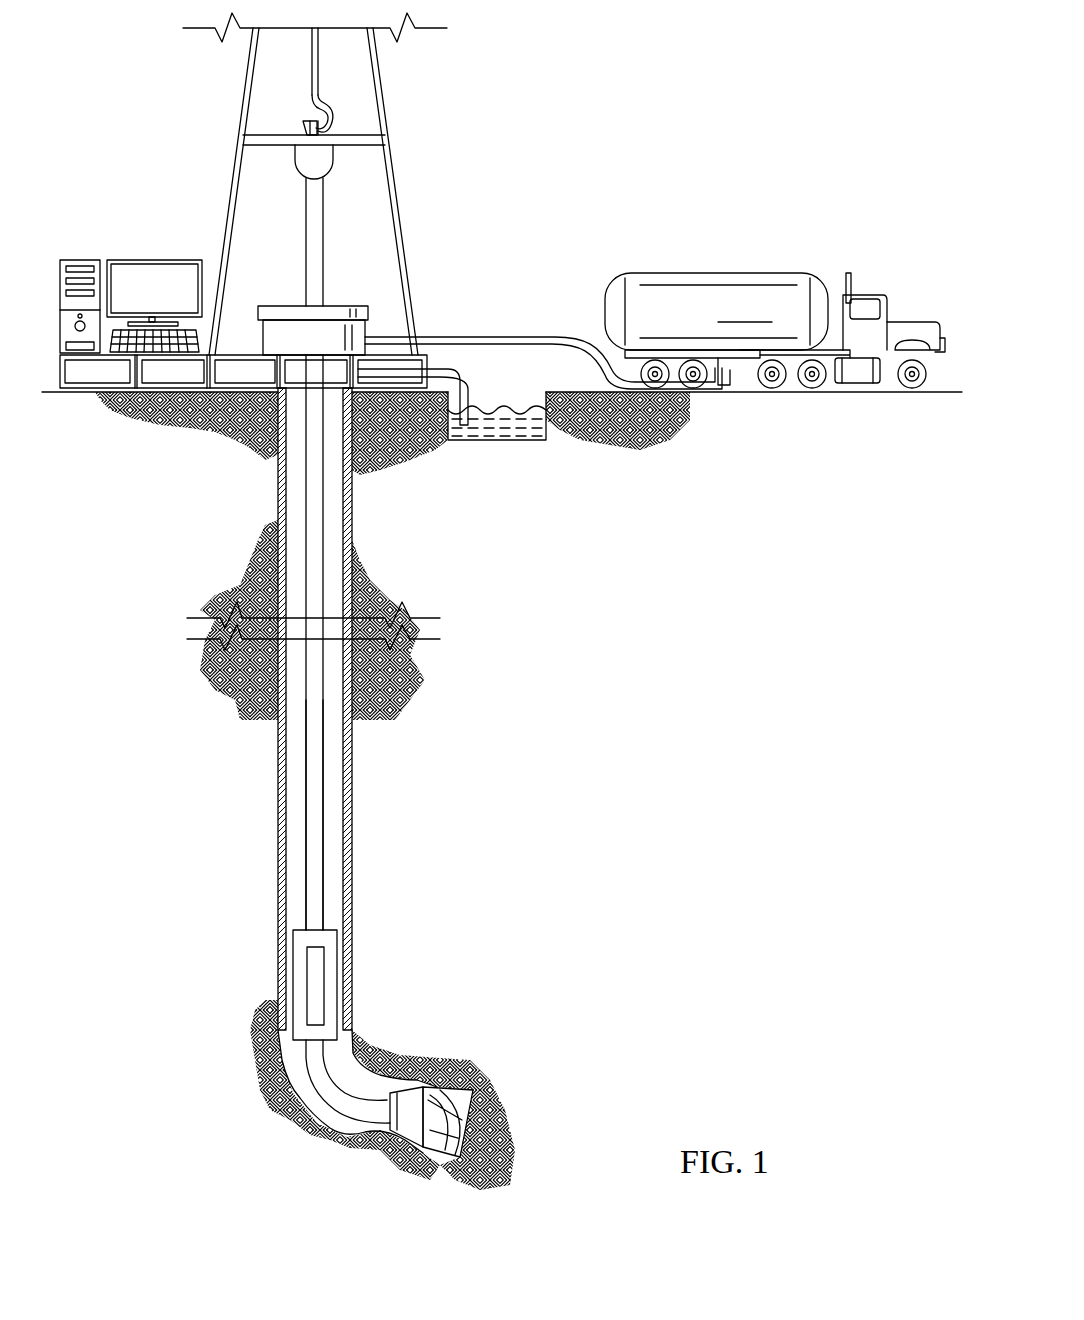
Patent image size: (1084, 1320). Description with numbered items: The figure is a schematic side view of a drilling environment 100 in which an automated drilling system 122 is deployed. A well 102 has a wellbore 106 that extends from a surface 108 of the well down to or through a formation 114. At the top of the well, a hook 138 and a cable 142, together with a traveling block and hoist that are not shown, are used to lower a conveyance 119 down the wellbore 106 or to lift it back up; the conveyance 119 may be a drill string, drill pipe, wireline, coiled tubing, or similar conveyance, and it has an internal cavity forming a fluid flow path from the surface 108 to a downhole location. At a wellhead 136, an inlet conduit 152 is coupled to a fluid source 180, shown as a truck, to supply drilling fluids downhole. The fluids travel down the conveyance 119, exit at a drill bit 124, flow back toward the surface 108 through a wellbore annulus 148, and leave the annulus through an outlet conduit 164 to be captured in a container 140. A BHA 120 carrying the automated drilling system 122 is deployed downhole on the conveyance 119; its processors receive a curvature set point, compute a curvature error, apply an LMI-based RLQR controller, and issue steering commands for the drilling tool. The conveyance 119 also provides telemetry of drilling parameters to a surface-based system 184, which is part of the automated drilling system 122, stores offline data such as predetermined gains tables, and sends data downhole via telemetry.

The drilling environment 100 is at (168, 165).
The well 102 is at (342, 295).
The wellbore 106 is at (348, 532).
The surface 108 is at (857, 393).
The formation 114 is at (563, 1140).
The conveyance 119 is at (313, 873).
The BHA 120 is at (332, 953).
The automated drilling system 122 is at (314, 967).
The drill bit 124 is at (443, 1140).
The wellhead 136 is at (282, 306).
The hook 138 is at (331, 118).
The container 140 is at (500, 440).
The cable 142 is at (310, 83).
The wellbore annulus 148 is at (295, 468).
The inlet conduit 152 is at (520, 336).
The outlet conduit 164 is at (468, 388).
The fluid source 180 is at (867, 292).
The surface-based system 184 is at (80, 260).